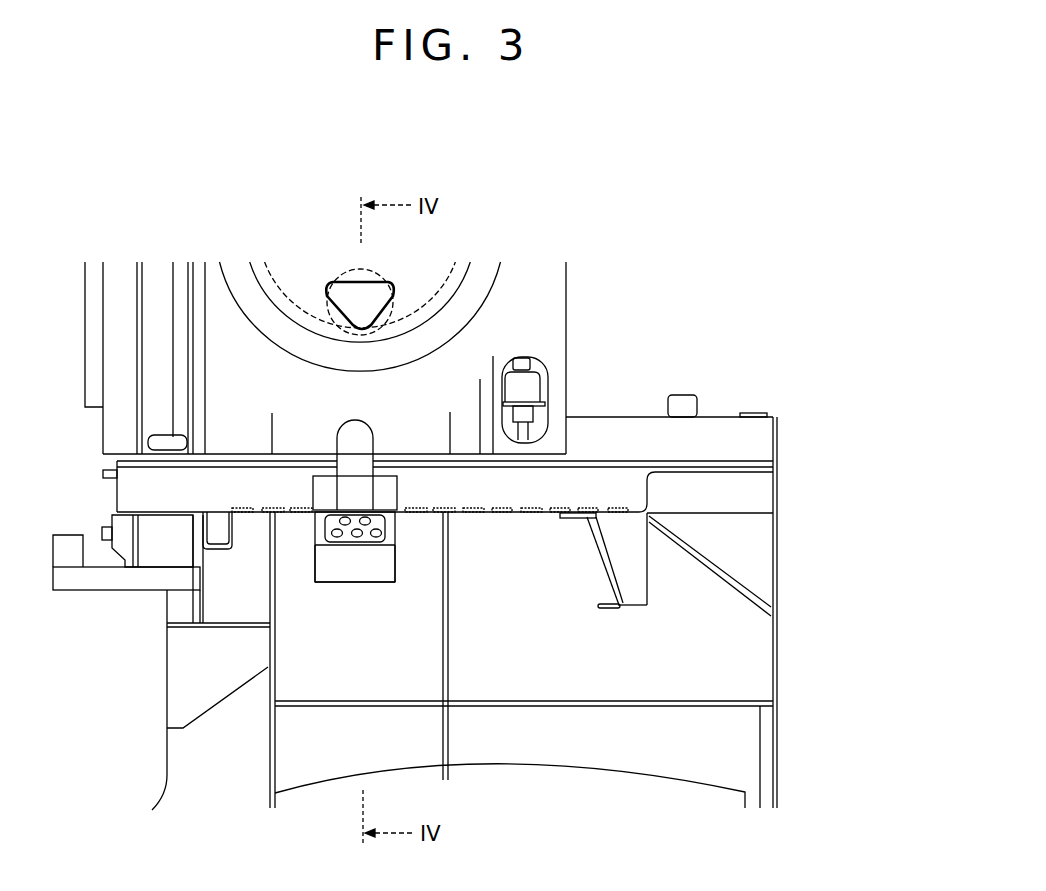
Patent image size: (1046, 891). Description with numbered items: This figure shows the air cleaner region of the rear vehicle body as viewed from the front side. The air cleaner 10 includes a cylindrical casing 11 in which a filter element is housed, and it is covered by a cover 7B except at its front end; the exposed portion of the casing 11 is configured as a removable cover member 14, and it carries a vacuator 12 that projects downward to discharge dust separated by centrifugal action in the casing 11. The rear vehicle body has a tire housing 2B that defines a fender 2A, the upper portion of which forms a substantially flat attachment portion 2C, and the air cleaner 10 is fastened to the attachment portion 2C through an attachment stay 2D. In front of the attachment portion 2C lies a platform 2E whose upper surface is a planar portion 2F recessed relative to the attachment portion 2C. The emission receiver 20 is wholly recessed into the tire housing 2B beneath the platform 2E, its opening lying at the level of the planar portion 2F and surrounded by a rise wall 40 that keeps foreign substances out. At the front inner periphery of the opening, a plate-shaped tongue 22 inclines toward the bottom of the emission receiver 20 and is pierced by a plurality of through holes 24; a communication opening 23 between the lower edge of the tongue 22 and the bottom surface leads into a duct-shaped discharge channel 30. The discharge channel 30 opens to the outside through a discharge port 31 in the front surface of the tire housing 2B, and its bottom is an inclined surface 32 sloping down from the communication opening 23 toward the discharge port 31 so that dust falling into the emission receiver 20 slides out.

The air cleaner 10 is at (450, 302).
The casing 11 is at (490, 300).
The cover member 14 is at (455, 328).
The vacuator 12 is at (366, 432).
The cover 7B is at (555, 325).
The attachment stay 2D is at (283, 441).
The attachment portion 2C is at (612, 463).
The platform 2E is at (566, 486).
The planar portion 2F is at (522, 512).
The fender 2A is at (790, 456).
The tire housing 2B is at (778, 661).
The rise wall 40 is at (398, 490).
The emission receiver 20 is at (400, 521).
The tongue 22 is at (390, 529).
The through holes 24 is at (358, 537).
The communication opening 23 is at (322, 556).
The discharge channel 30 is at (376, 577).
The discharge port 31 is at (327, 572).
The inclined surface 32 is at (384, 571).